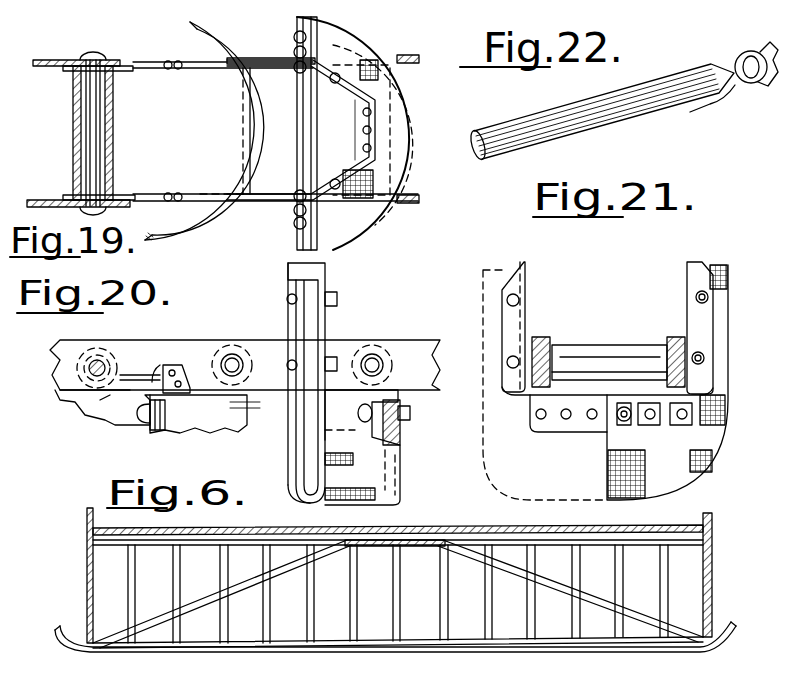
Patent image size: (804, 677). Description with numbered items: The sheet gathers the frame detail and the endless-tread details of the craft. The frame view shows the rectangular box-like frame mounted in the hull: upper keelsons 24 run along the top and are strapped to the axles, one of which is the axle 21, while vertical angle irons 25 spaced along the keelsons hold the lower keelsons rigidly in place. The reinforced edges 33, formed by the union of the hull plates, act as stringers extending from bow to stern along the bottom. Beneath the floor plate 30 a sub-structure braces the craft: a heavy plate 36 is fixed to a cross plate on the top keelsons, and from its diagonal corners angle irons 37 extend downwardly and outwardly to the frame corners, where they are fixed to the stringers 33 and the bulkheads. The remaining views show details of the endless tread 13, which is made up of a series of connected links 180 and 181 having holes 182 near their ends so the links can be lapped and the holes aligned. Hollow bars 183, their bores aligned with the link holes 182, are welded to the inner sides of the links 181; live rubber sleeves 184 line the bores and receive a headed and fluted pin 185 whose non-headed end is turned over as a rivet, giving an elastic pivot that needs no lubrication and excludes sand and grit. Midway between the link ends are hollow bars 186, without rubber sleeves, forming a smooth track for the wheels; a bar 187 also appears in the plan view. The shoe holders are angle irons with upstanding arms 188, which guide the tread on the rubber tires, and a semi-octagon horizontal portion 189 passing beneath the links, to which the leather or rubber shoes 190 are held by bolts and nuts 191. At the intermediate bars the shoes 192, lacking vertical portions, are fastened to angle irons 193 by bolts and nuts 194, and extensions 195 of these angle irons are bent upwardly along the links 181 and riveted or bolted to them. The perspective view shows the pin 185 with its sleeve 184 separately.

In FIG. 19, the endless tread 13 is at (41, 43).
In FIG. 19, the link 180 is at (44, 60).
In FIG. 19, the link 181 is at (150, 50).
In FIG. 20, the link 181 is at (218, 338).
In FIG. 20, the link hole 182 is at (97, 362).
In FIG. 19, the hollow bar 183 is at (74, 100).
In FIG. 21, the hollow bar 183 is at (634, 328).
In FIG. 19, the rubber sleeve 184 is at (80, 140).
In FIG. 22, the rubber sleeve 184 is at (740, 54).
In FIG. 19, the fluted pin 185 is at (80, 170).
In FIG. 22, the fluted pin 185 is at (676, 80).
In FIG. 19, the hollow bar 186 is at (226, 125).
In FIG. 19, the cross bar 187 is at (253, 42).
In FIG. 21, the upstanding arm 188 is at (512, 312).
In FIG. 20, the upstanding arm 188 is at (322, 266).
In FIG. 19, the semi-octagon horizontal portion 189 is at (368, 128).
In FIG. 20, the semi-octagon horizontal portion 189 is at (327, 416).
In FIG. 19, the shoe 190 is at (398, 98).
In FIG. 21, the shoe 190 is at (608, 462).
In FIG. 20, the shoe 190 is at (312, 322).
In FIG. 19, the bolts and nuts 191 is at (333, 80).
In FIG. 21, the bolts and nuts 191 is at (682, 424).
In FIG. 20, the bolts and nuts 191 is at (337, 296).
In FIG. 20, the shoe 192 is at (220, 427).
In FIG. 20, the angle iron 193 is at (155, 369).
In FIG. 20, the bolts and nuts 194 is at (142, 418).
In FIG. 20, the extension 195 is at (172, 368).
In FIG. 20, the axle 21 is at (430, 497).
In FIG. 6, the upper keelson 24 is at (712, 545).
In FIG. 6, the vertical angle iron 25 is at (300, 609).
In FIG. 6, the floor plate 30 is at (86, 572).
In FIG. 6, the reinforced edge 33 is at (288, 650).
In FIG. 6, the heavy plate 36 is at (380, 548).
In FIG. 6, the angle iron 37 is at (172, 594).